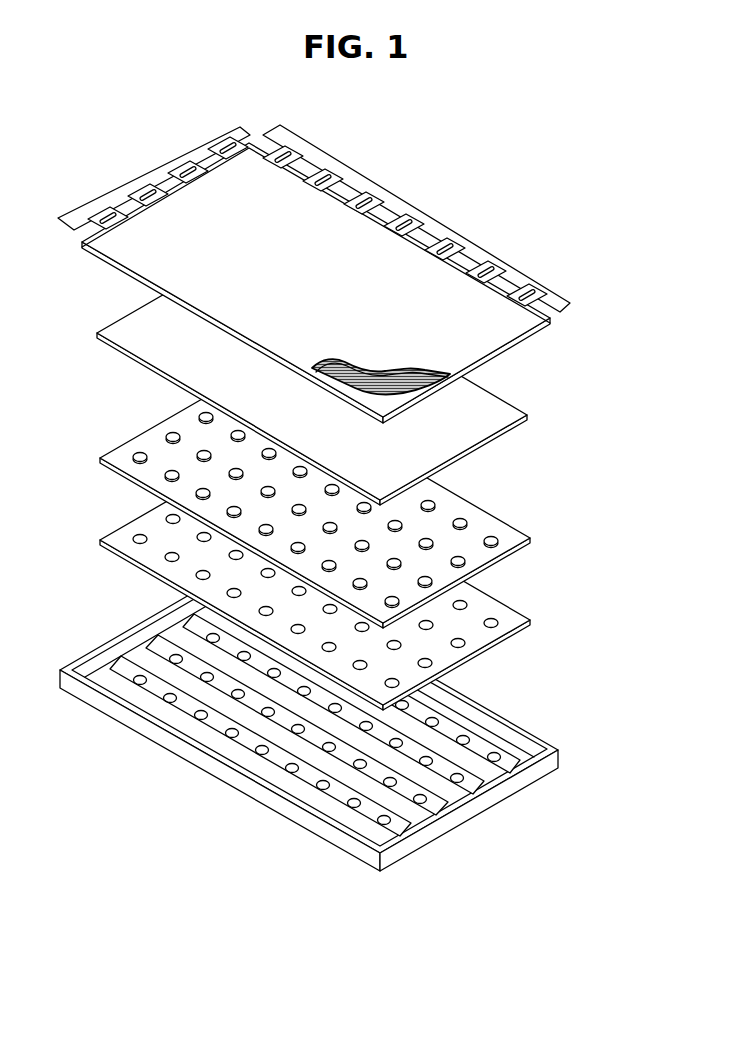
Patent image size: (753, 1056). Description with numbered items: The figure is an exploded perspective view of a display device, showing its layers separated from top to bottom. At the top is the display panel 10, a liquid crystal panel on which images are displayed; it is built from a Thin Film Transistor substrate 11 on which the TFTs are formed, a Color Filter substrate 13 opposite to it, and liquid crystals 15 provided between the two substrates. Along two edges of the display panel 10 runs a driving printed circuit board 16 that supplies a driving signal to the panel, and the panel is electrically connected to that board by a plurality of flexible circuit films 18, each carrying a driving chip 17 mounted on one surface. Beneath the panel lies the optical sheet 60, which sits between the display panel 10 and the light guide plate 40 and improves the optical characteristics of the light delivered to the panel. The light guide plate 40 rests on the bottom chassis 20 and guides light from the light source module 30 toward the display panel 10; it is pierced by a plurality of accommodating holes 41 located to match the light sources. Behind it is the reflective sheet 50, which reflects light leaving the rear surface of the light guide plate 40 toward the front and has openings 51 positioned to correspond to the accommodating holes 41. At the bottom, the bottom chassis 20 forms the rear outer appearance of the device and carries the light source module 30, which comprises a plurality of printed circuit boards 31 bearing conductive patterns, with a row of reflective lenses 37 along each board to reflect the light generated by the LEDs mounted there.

The display panel 10 is at (362, 271).
The Thin Film Transistor (TFT) substrate 11 is at (328, 283).
The Color Filter (CF) substrate 13 is at (316, 282).
The liquid crystals 15 is at (382, 391).
The driving printed circuit board 16 is at (157, 178).
The driving chip 17 is at (187, 170).
The flexible circuit film 18 is at (143, 194).
The bottom chassis 20 is at (568, 753).
The light source module 30 is at (298, 736).
The printed circuit board 31 is at (212, 686).
The reflective lens 37 is at (345, 799).
The light guide plate 40 is at (354, 500).
The accommodating hole 41 is at (464, 518).
The reflective sheet 50 is at (354, 582).
The opening 51 is at (494, 616).
The optical sheet 60 is at (541, 413).